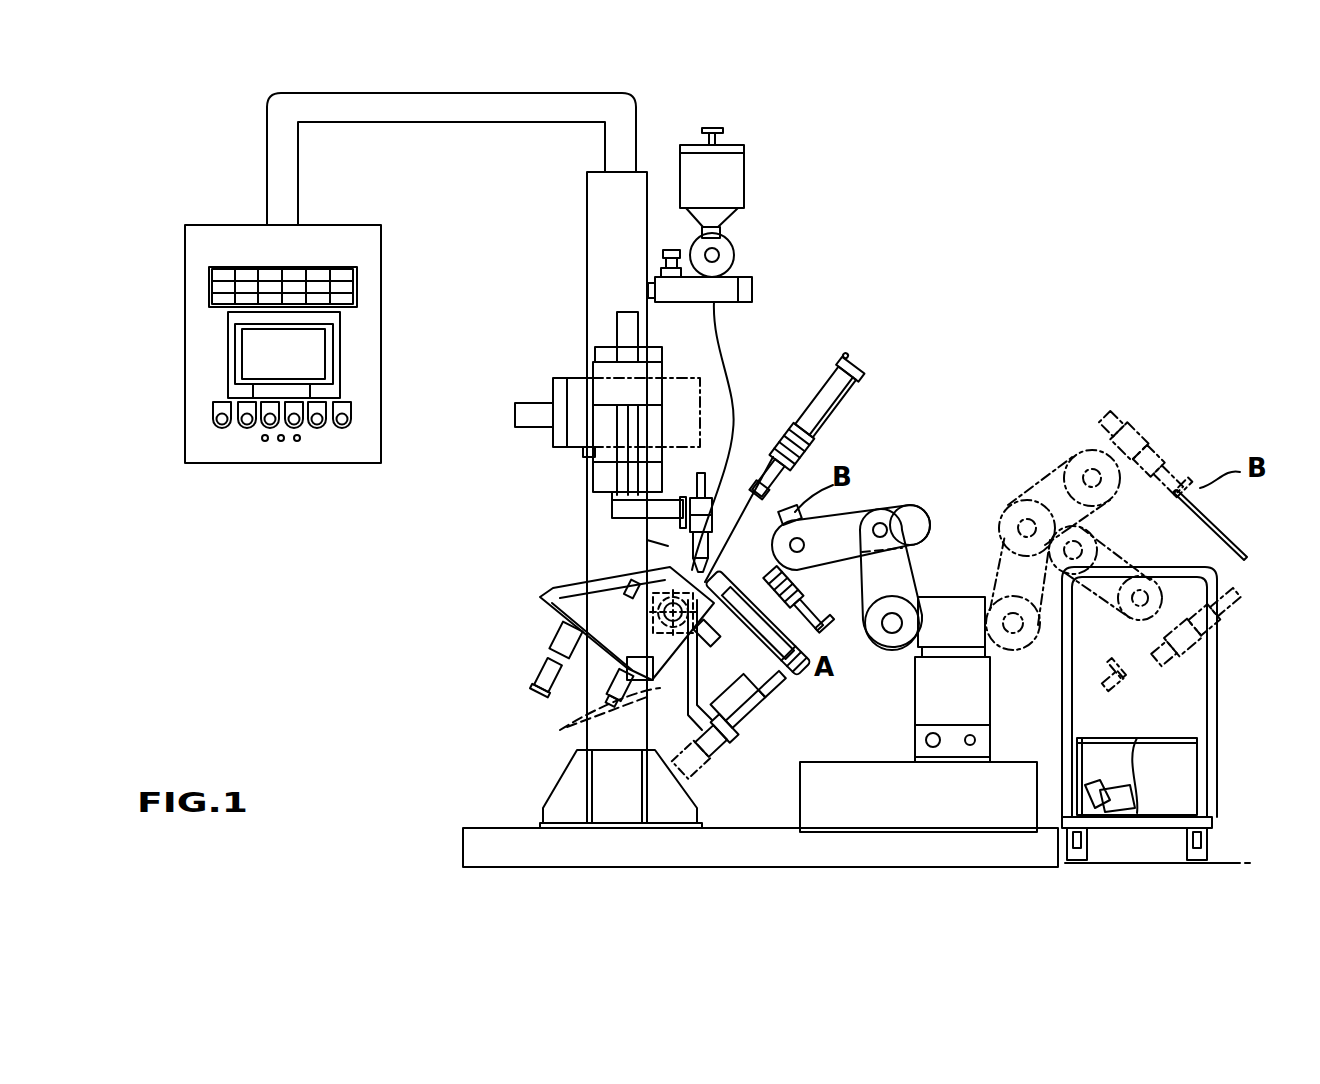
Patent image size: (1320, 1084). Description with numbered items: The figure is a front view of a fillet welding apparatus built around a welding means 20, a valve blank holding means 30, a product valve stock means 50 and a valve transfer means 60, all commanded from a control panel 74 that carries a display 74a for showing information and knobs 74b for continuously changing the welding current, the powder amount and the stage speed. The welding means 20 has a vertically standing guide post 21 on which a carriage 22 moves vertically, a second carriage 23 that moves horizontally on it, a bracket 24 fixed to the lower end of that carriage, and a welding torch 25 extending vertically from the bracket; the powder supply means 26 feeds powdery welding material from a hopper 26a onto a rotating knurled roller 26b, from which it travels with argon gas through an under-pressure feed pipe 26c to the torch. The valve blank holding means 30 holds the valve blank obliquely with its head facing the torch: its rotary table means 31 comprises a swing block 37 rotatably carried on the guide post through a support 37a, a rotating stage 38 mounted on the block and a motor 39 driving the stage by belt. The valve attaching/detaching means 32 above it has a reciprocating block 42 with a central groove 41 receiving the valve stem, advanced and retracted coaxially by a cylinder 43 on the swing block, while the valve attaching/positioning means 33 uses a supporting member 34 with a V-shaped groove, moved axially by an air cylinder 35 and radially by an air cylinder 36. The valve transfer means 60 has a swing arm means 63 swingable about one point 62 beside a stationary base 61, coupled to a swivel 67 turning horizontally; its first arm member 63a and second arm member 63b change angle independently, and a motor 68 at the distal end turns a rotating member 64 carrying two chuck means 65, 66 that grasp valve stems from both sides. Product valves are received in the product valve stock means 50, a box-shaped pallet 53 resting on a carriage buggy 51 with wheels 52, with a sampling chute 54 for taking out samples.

The welding means 20 is at (548, 437).
The guide post 21 is at (595, 273).
The carriage 22 is at (571, 440).
The carriage 23 is at (652, 370).
The bracket 24 is at (657, 513).
The welding torch 25 is at (717, 512).
The powder supply means 26 is at (752, 349).
The hopper 26a is at (735, 174).
The rotating knurled roller 26b is at (730, 250).
The under-pressure feed pipe 26c is at (715, 322).
The valve blank holding means 30 is at (831, 634).
The rotary table means 31 is at (668, 544).
The valve attaching/detaching means 32 is at (831, 451).
The valve attaching/positioning means 33 is at (771, 706).
The supporting member 34 is at (735, 640).
The axially moving means 35 is at (735, 723).
The radially moving means 36 is at (775, 677).
The swing block 37 is at (568, 605).
The support 37a is at (567, 727).
The rotating stage 38 is at (687, 572).
The motor 39 is at (560, 660).
The groove 41 is at (785, 430).
The reciprocating block 42 is at (810, 452).
The cylinder 43 is at (830, 408).
The product valve stock means 50 is at (1183, 741).
The carriage buggy 51 is at (1180, 815).
The wheels 52 is at (1185, 860).
The box-shaped pallet 53 is at (1188, 765).
The sampling chute 54 is at (1240, 550).
The valve transfer means 60 is at (1008, 562).
The stationary base 61 is at (972, 815).
The one point 62 is at (893, 625).
The swing arm means 63 is at (918, 573).
The first arm member 63a is at (897, 573).
The second arm member 63b is at (910, 513).
The rotating member 64 is at (725, 655).
The chuck means 65 is at (818, 640).
The chuck means 66 is at (1127, 425).
The swivel 67 is at (960, 680).
The motor 68 is at (800, 520).
The control panel 74 is at (201, 453).
The display 74a is at (308, 351).
The knobs 74b is at (252, 447).